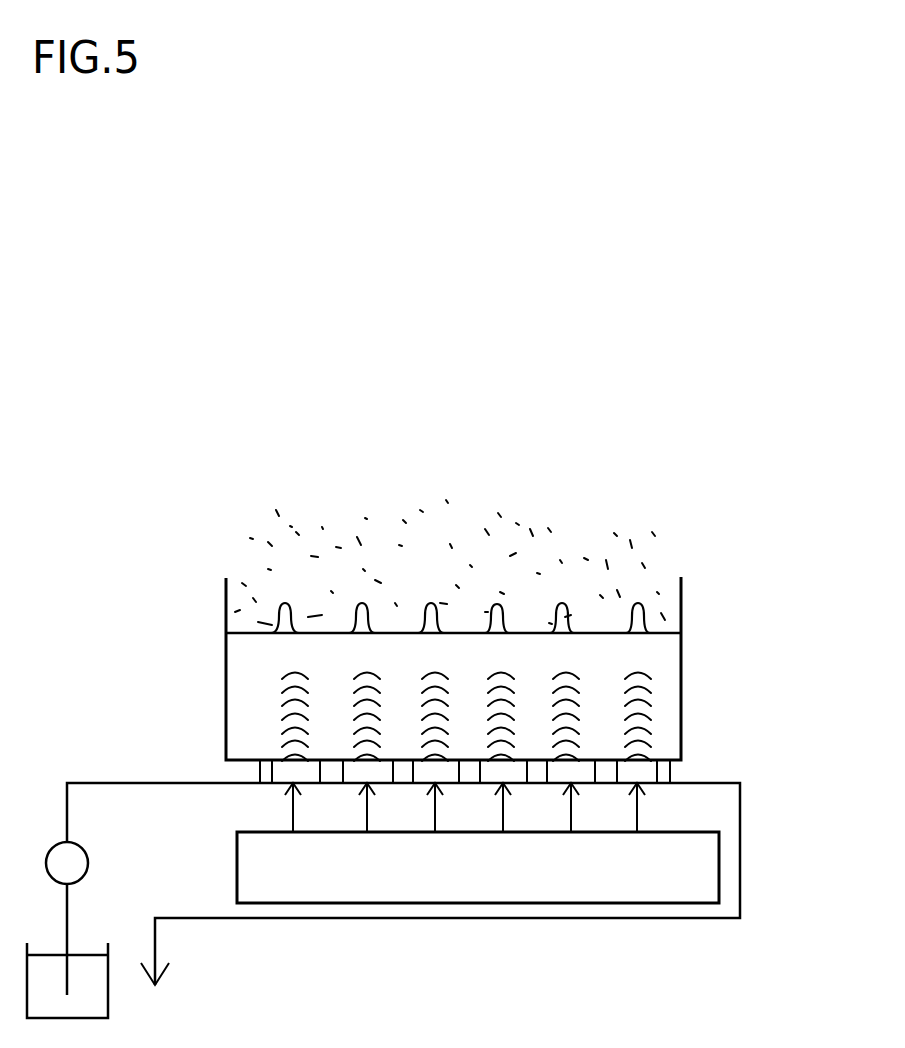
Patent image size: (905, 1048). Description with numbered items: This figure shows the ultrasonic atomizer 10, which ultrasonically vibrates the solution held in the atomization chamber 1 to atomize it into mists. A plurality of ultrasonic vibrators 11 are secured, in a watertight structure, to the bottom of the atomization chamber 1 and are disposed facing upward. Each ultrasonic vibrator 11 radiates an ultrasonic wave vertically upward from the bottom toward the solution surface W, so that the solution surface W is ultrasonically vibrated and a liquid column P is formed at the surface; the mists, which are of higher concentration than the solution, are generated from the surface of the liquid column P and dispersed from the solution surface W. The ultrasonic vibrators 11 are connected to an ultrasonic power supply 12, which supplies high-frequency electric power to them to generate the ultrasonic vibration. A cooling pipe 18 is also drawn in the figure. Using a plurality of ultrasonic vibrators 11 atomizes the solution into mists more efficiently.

The atomization chamber 1 is at (677, 534).
The ultrasonic atomizer 10 is at (216, 843).
The ultrasonic vibrator 11 is at (358, 768).
The ultrasonic power supply 12 is at (536, 903).
The cooling pipe 18 is at (160, 783).
The liquid column P is at (285, 603).
The solution surface W is at (465, 633).